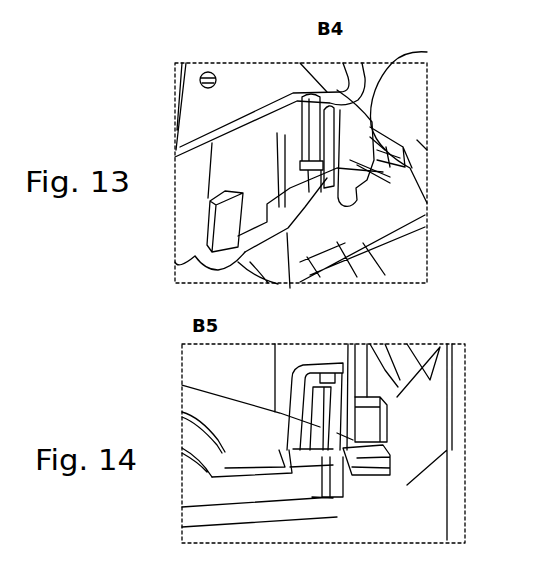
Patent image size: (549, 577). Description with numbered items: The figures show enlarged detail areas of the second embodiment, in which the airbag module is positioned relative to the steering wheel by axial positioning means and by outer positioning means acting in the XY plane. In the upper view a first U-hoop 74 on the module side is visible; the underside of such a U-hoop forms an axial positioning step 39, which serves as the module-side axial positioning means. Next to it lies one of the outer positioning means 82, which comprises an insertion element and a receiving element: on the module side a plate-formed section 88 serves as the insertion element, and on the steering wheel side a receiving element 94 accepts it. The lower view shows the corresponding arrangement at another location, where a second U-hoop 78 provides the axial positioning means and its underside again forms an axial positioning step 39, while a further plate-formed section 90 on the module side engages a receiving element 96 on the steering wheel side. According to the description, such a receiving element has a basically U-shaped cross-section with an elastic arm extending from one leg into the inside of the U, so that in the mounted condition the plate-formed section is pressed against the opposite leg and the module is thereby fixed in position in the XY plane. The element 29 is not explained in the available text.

In FIG. 13, the first U-hoop 74 is at (312, 122).
In FIG. 13, the outer positioning means 82 is at (402, 142).
In FIG. 13, the receiving element 94 is at (370, 184).
In FIG. 13, the plate-formed section 88 is at (362, 200).
In FIG. 13, the panel edge 29 is at (290, 288).
In FIG. 14, the second U-hoop 78 is at (278, 413).
In FIG. 14, the axial positioning step 39 is at (327, 498).
In FIG. 14, the plate-formed section 90 is at (352, 475).
In FIG. 14, the receiving element 96 is at (392, 473).